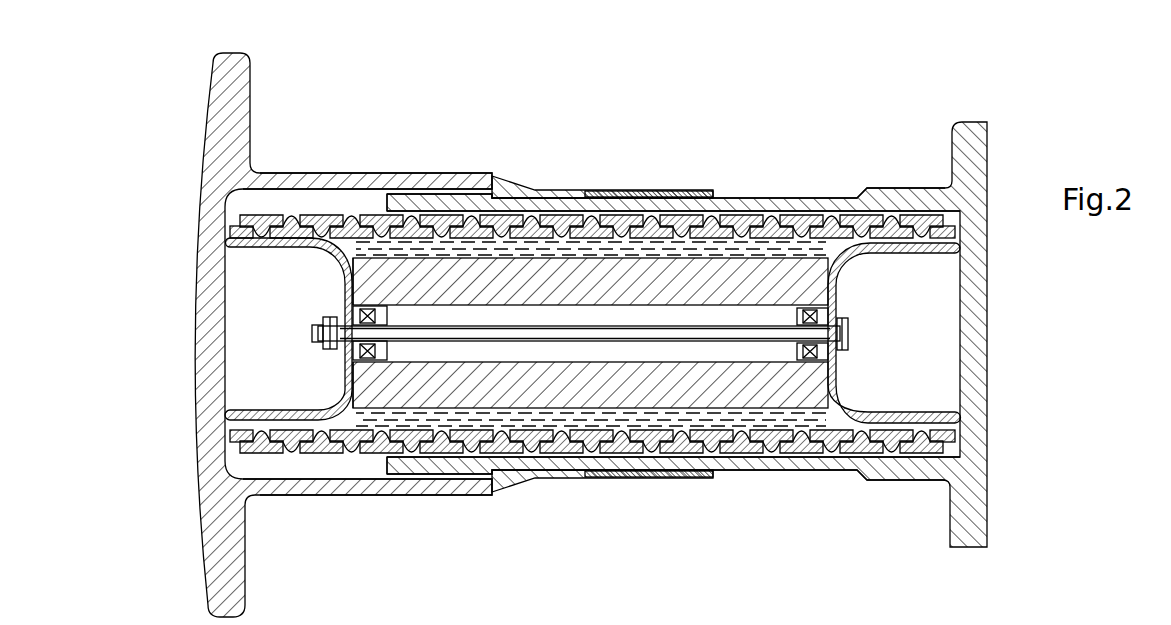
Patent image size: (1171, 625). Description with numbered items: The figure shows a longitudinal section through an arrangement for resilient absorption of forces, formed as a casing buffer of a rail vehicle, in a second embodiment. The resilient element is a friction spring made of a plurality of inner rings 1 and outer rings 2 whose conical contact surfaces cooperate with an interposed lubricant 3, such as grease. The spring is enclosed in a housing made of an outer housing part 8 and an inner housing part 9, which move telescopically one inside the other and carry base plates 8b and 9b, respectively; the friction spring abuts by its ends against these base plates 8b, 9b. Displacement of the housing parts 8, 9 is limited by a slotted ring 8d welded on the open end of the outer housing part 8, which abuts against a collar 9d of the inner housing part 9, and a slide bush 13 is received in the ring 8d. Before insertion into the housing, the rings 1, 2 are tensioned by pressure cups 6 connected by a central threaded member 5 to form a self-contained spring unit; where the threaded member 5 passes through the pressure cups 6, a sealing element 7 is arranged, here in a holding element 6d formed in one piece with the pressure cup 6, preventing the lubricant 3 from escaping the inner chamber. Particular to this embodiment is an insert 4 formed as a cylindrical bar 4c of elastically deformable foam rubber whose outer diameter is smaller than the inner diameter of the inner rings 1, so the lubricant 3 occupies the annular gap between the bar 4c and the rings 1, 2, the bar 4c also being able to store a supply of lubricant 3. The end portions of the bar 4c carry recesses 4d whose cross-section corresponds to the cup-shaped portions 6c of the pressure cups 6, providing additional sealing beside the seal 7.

The inner rings 1 is at (768, 440).
The outer rings 2 is at (742, 446).
The lubricant 3 is at (588, 332).
The insert 4 is at (503, 412).
The cylindrical bar 4c is at (378, 398).
The recesses 4d is at (356, 254).
The central threaded member 5 is at (832, 335).
The pressure cups 6 is at (560, 377).
The cup-shaped portions 6c is at (346, 392).
The holding element 6d is at (838, 352).
The sealing element 7 is at (362, 316).
The outer housing part 8 is at (333, 178).
The base plate 8b is at (214, 532).
The slotted ring 8d is at (563, 193).
The inner housing part 9 is at (778, 202).
The base plate 9b is at (960, 140).
The collar 9d is at (448, 203).
The slide bush 13 is at (633, 192).